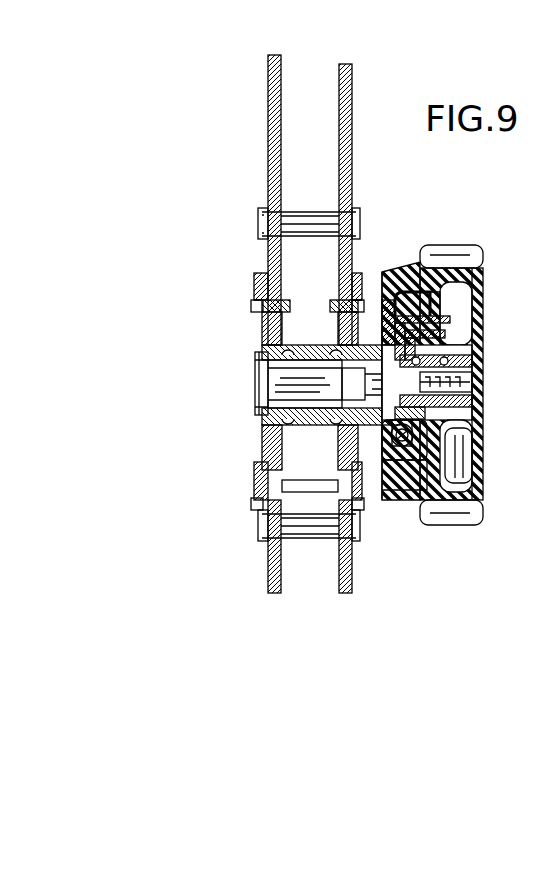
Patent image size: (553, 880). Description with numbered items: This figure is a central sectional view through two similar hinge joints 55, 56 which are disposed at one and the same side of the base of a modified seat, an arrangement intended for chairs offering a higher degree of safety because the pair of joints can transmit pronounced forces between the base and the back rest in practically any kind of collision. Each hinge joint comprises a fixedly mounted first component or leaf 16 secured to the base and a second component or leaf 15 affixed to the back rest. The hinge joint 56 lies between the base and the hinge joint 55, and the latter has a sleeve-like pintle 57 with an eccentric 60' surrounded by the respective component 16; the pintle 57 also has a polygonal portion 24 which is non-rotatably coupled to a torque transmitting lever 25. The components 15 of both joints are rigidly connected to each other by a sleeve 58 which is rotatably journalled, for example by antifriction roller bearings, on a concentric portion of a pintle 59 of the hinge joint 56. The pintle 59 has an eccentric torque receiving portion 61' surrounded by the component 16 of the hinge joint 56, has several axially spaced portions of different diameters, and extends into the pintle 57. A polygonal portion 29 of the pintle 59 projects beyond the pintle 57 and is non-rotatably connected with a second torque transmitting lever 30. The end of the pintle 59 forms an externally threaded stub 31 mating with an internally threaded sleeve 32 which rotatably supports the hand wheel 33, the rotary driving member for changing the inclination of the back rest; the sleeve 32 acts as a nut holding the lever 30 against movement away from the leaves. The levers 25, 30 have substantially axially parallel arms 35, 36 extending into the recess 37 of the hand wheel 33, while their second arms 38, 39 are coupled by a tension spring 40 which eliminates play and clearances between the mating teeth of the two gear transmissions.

The second component or leaf 15 is at (268, 90).
The first component or leaf 16 is at (268, 580).
The polygonal portion 24 is at (490, 428).
The torque transmitting lever 25 is at (400, 300).
The polygonal portion 29 is at (470, 364).
The torque transmitting lever 30 is at (455, 426).
The externally threaded stub 31 is at (470, 399).
The internally threaded sleeve 32 is at (474, 380).
The hand wheel 33 is at (455, 250).
The arm 35 is at (450, 319).
The arm 36 is at (445, 334).
The recess 37 is at (441, 306).
The second arm 38 is at (399, 455).
The second arm 39 is at (417, 432).
The tension spring 40 is at (462, 462).
The hinge joint 55 is at (361, 248).
The hinge joint 56 is at (243, 276).
The sleeve-like pintle 57 is at (374, 300).
The sleeve 58 is at (268, 446).
The pintle 59 is at (245, 402).
The eccentric 60' is at (264, 322).
The eccentric torque receiving portion 61' is at (219, 383).